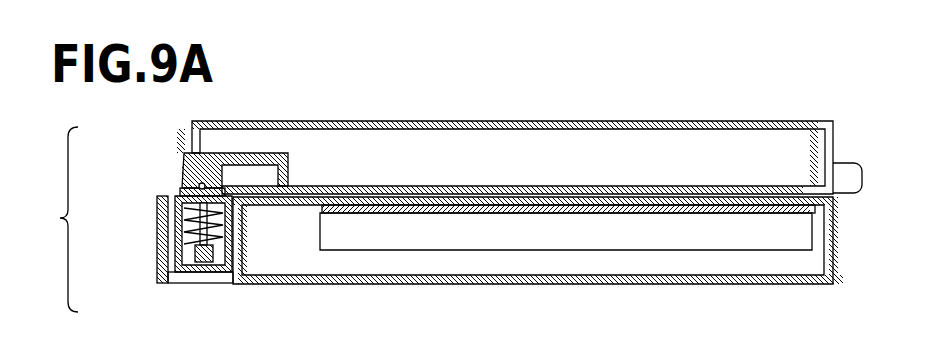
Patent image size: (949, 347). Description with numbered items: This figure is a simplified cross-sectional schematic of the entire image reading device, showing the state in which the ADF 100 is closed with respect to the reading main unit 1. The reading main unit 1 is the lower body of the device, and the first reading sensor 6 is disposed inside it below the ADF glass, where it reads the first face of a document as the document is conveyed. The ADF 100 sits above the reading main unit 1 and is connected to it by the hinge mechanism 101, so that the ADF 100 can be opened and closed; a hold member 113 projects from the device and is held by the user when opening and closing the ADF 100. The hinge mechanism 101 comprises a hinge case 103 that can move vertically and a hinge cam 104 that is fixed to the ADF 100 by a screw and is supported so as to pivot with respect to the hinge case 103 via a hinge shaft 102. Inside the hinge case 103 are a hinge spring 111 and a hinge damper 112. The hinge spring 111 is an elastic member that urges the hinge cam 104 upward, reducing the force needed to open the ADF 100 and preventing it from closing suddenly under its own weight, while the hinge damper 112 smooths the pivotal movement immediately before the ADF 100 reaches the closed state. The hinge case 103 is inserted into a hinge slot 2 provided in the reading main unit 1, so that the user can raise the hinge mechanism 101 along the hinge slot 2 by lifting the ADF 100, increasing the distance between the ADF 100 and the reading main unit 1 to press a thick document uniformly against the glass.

The ADF 100 is at (462, 121).
The hold member 113 is at (842, 176).
The reading main unit 1 is at (709, 285).
The first reading sensor 6 is at (416, 241).
The hinge cam 104 is at (186, 172).
The hinge shaft 102 is at (198, 189).
The hinge spring 111 is at (177, 227).
The hinge damper 112 is at (198, 247).
The hinge case 103 is at (190, 273).
The hinge slot 2 is at (213, 284).
The hinge mechanism 101 is at (43, 219).